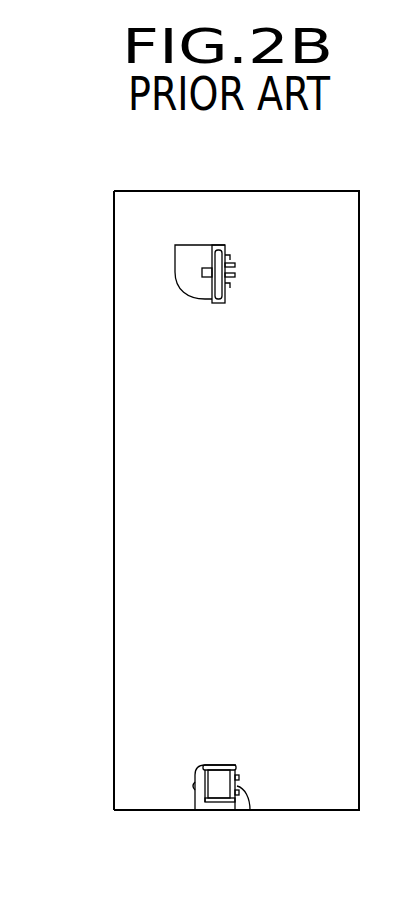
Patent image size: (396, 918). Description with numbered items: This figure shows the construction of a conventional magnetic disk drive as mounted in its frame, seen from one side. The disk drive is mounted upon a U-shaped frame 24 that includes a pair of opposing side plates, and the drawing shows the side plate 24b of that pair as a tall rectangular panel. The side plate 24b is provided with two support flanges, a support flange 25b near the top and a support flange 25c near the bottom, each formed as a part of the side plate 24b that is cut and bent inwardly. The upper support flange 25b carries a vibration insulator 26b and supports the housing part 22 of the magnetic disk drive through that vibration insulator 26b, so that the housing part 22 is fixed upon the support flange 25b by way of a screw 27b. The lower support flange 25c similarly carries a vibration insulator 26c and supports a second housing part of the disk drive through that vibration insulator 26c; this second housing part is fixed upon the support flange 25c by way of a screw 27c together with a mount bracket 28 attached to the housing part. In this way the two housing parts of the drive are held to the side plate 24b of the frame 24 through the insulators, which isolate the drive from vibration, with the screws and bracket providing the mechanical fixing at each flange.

The U-shaped frame 24 is at (165, 188).
The side plate 24b is at (132, 235).
The housing part 22 is at (210, 289).
The support flange 25b is at (220, 245).
The screw 27b is at (203, 268).
The vibration insulator 26b is at (235, 283).
The mount bracket 28 is at (200, 806).
The support flange 25c is at (238, 788).
The vibration insulator 26c is at (218, 795).
The screw 27c is at (195, 787).